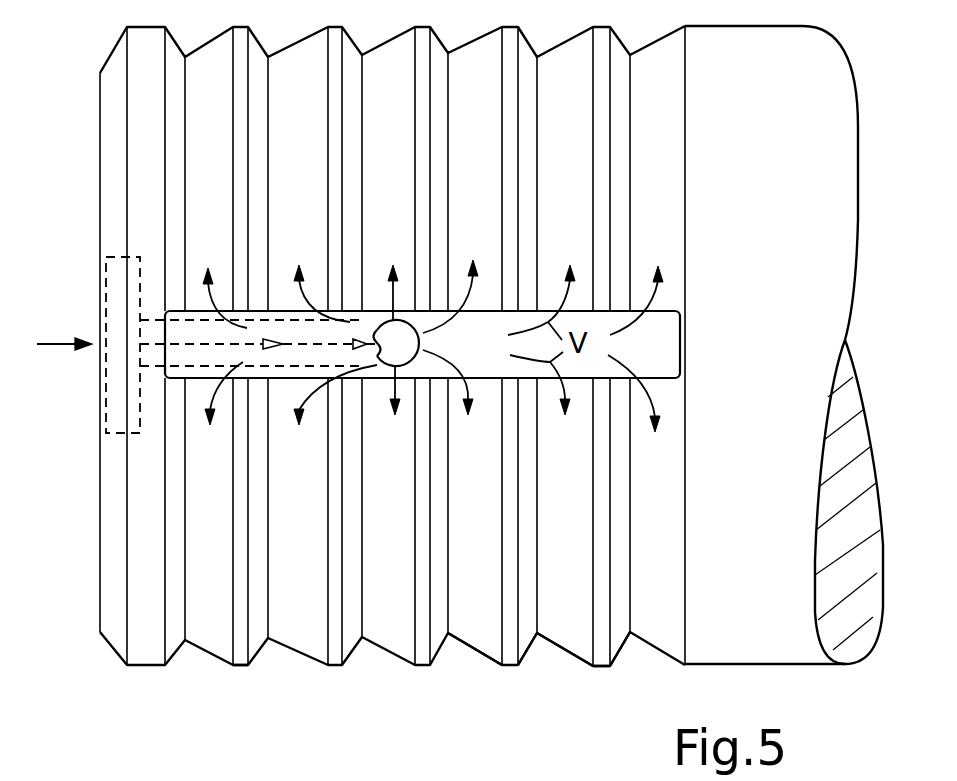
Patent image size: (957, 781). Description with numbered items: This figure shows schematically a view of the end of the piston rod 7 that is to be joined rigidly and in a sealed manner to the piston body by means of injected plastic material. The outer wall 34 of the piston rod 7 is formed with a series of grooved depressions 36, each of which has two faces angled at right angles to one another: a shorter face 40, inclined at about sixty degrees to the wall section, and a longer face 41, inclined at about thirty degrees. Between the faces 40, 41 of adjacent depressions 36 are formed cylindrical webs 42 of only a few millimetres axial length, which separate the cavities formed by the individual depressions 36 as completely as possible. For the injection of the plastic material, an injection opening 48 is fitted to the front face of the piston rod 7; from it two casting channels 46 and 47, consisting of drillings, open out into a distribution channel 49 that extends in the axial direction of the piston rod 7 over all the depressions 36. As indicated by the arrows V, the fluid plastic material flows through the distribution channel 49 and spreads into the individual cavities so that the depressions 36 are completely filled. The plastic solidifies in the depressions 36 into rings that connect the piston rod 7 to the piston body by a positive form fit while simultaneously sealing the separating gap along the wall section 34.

The piston rod 7 is at (813, 163).
The outer wall of the piston rod 34 is at (763, 647).
The depressions 36 is at (457, 658).
The shorter face 40 is at (527, 643).
The longer face 41 is at (570, 630).
The cylindrical webs 42 is at (242, 650).
The casting channel 46 is at (190, 360).
The casting channel 47 is at (420, 343).
The injection opening 48 is at (113, 300).
The distribution channel 49 is at (667, 340).